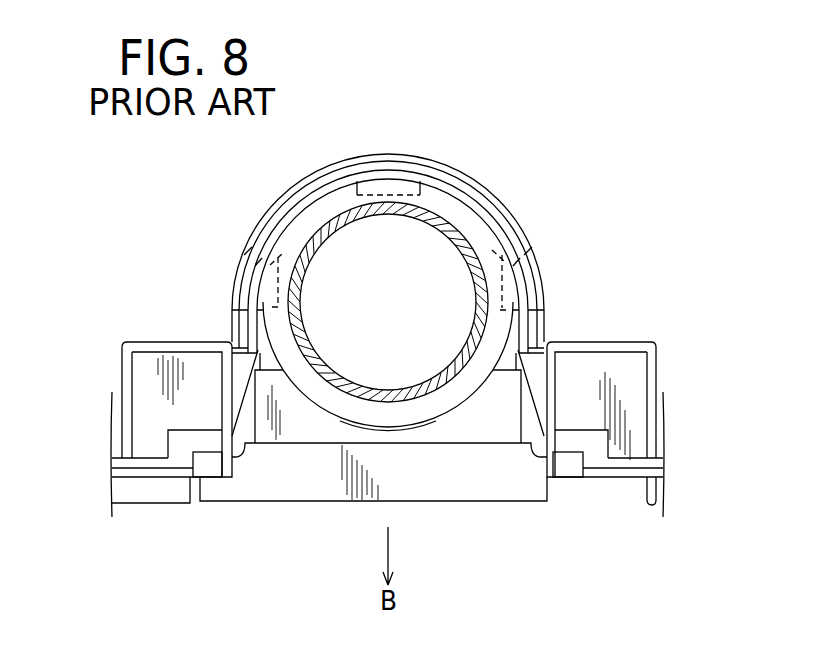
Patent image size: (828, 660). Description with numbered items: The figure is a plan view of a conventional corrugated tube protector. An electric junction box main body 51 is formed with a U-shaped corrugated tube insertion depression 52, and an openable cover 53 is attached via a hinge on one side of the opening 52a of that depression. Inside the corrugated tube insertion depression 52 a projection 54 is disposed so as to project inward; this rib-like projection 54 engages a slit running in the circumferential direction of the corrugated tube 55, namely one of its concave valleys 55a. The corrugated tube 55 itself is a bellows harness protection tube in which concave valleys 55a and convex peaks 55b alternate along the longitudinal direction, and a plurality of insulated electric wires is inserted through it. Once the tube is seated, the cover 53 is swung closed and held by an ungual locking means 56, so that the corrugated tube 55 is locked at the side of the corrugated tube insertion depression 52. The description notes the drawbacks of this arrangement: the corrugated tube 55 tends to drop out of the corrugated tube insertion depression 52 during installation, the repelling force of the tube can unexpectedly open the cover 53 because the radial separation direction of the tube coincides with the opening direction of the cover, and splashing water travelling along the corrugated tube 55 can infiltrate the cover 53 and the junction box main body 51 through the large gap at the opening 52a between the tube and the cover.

The electric junction box main body 51 is at (616, 480).
The corrugated tube insertion depression 52 is at (500, 268).
The opening 52a is at (503, 418).
The cover 53 is at (480, 500).
The projection 54 is at (242, 247).
The corrugated tube 55 is at (332, 412).
The concave valley 55a is at (455, 215).
The convex peak 55b is at (437, 418).
The ungual locking means 56 is at (250, 415).